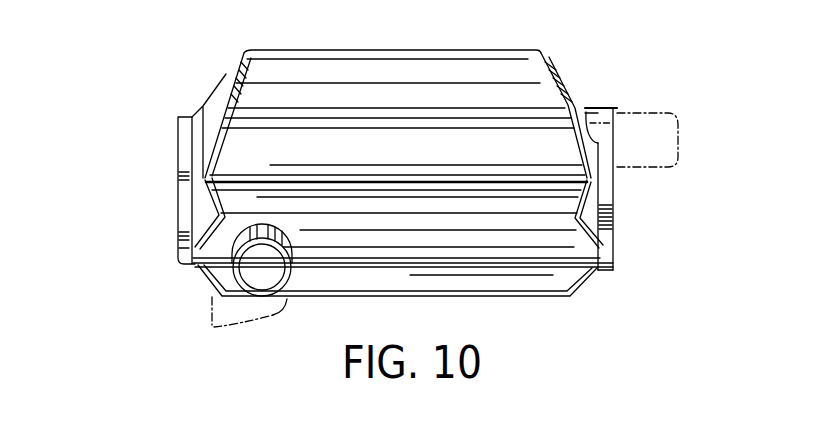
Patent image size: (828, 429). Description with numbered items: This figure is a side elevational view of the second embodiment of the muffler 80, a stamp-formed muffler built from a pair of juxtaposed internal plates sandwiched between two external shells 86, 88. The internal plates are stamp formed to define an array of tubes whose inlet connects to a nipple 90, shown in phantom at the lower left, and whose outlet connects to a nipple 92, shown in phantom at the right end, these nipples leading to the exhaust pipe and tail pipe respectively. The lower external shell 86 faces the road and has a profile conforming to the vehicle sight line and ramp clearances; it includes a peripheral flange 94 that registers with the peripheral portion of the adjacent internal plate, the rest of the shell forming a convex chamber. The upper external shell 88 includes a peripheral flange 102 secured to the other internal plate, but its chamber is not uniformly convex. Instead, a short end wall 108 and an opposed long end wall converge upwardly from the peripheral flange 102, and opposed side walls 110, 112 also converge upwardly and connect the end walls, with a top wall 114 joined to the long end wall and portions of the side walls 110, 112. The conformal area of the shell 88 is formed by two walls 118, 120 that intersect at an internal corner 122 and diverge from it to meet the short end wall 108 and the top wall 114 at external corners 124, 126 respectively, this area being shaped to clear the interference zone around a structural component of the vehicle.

The muffler 80 is at (149, 199).
The external shell 86 is at (547, 292).
The external shell 88 is at (484, 48).
The nipple 90 is at (229, 330).
The nipple 92 is at (662, 104).
The peripheral flange 94 is at (603, 268).
The peripheral flange 102 is at (612, 183).
The short end wall 108 is at (445, 243).
The side wall 110 is at (221, 96).
The side wall 112 is at (574, 105).
The top wall 114 is at (378, 78).
The wall 118 is at (351, 199).
The wall 120 is at (287, 143).
The internal corner 122 is at (525, 192).
The external corner 124 is at (380, 220).
The external corner 126 is at (432, 128).